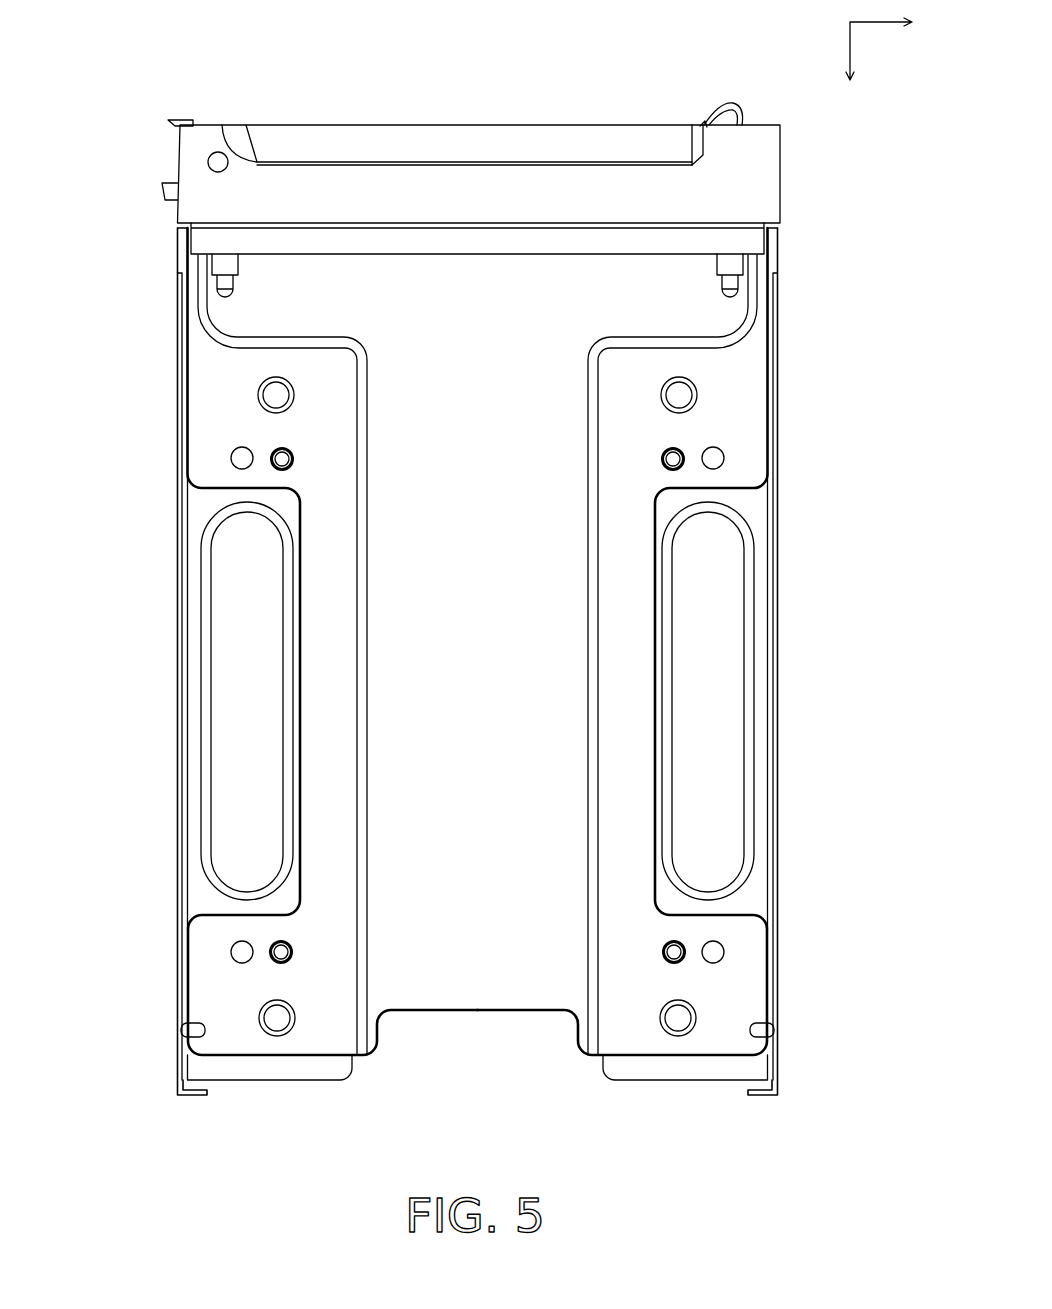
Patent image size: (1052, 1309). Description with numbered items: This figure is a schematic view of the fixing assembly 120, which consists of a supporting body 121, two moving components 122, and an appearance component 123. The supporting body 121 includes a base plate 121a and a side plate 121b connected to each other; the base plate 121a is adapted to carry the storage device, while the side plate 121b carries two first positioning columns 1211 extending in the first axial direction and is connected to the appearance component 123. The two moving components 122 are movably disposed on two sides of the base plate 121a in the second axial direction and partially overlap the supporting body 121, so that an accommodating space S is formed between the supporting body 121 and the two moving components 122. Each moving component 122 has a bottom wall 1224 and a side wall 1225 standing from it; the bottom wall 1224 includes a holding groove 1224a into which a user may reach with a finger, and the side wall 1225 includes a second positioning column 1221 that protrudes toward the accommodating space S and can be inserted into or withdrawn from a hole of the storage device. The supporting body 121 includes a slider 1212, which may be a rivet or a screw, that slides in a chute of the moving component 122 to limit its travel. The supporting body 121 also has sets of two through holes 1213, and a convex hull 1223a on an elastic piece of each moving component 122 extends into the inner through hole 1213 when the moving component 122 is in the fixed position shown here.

The fixing assembly 120 is at (84, 3).
The supporting body 121 is at (84, 191).
The base plate 121a is at (414, 286).
The side plate 121b is at (527, 102).
The first positioning column 1211 is at (225, 265).
The slider 1212 is at (277, 1018).
The through hole 1213 is at (270, 437).
The moving component 122 is at (201, 590).
The second positioning column 1221 is at (197, 1032).
The convex hull 1223a is at (281, 954).
The bottom wall 1224 is at (300, 724).
The holding groove 1224a is at (236, 665).
The side wall 1225 is at (178, 797).
The appearance component 123 is at (803, 180).
The accommodating space S is at (445, 745).